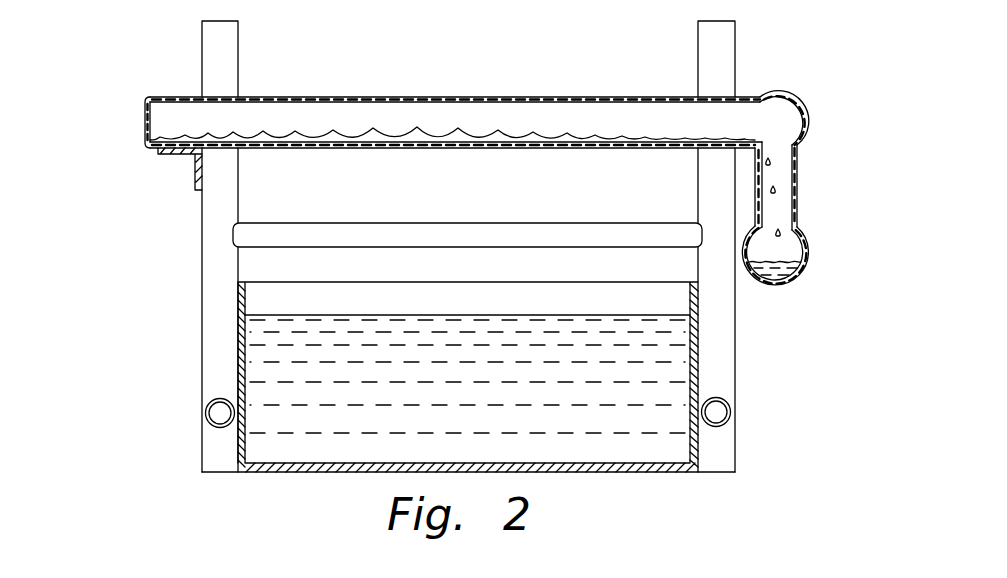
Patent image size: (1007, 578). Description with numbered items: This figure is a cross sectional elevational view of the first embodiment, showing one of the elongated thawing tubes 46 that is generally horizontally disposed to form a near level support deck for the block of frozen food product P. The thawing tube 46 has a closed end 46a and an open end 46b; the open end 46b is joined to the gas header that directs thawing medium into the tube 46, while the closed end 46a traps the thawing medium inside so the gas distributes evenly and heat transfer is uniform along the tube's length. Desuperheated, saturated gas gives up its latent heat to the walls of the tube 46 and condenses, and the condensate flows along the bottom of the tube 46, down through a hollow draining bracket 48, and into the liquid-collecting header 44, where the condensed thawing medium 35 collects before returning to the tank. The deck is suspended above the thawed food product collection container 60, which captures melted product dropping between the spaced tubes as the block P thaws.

The thawing tube 46 is at (433, 97).
The closed end 46a is at (145, 118).
The open end 46b is at (780, 123).
The hollow draining bracket 48 is at (797, 178).
The liquid-collecting header 44 is at (807, 234).
The condensed thawing medium 35 is at (805, 265).
The thawed food product collection container 60 is at (683, 293).
The block of frozen food product P is at (275, 392).